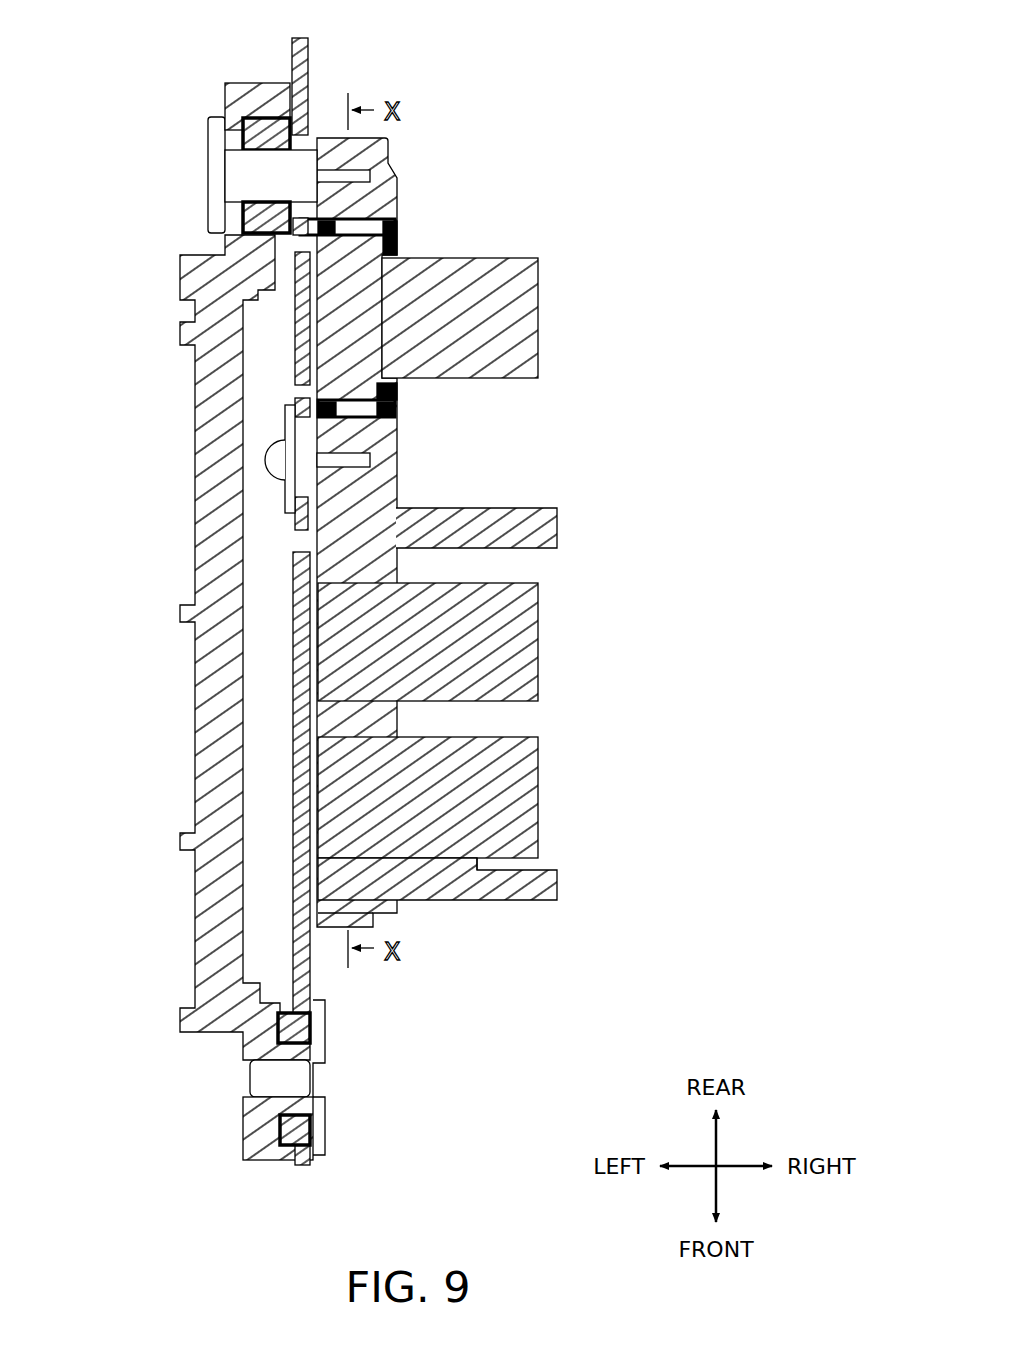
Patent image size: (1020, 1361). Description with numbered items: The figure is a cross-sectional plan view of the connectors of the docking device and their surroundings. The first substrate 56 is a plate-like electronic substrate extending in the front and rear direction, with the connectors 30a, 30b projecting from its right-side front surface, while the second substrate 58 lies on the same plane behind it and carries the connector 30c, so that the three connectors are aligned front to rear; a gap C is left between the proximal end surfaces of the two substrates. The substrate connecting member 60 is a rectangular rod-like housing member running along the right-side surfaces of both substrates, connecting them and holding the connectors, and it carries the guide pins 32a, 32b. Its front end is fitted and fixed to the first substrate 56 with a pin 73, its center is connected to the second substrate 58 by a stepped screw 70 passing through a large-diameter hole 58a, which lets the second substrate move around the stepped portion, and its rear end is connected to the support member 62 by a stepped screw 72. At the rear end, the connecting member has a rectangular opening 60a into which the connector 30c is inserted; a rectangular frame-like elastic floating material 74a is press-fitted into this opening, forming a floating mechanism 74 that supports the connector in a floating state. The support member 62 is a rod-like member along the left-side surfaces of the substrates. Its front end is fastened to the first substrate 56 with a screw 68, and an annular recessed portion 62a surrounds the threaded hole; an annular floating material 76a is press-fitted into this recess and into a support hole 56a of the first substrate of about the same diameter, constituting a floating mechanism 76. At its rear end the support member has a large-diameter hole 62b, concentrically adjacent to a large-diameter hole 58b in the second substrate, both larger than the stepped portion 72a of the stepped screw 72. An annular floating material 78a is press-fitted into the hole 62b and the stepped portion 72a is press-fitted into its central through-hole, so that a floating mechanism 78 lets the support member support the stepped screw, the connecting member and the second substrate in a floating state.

The connector 30a is at (540, 802).
The connector 30b is at (540, 640).
The connector 30c is at (540, 318).
The guide pin 32a is at (557, 888).
The guide pin 32b is at (557, 528).
The first substrate 56 is at (293, 745).
The support hole 56a is at (303, 1143).
The second substrate 58 is at (300, 325).
The large-diameter hole 58a is at (300, 497).
The large-diameter hole 58b is at (305, 135).
The substrate connecting member 60 is at (395, 435).
The opening 60a is at (397, 232).
The support member 62 is at (200, 652).
The annular recessed portion 62a is at (292, 1008).
The large-diameter hole 62b is at (258, 127).
The screw 68 is at (266, 1078).
The stepped screw 70 is at (277, 460).
The stepped screw 72 is at (212, 160).
The stepped portion 72a is at (243, 190).
The pin 73 is at (305, 913).
The floating mechanism 74 is at (413, 241).
The floating material 74a is at (400, 392).
The floating mechanism 76 is at (272, 1178).
The floating material 76a is at (283, 1128).
The floating mechanism 78 is at (183, 118).
The floating material 78a is at (240, 226).
The gap C is at (300, 541).